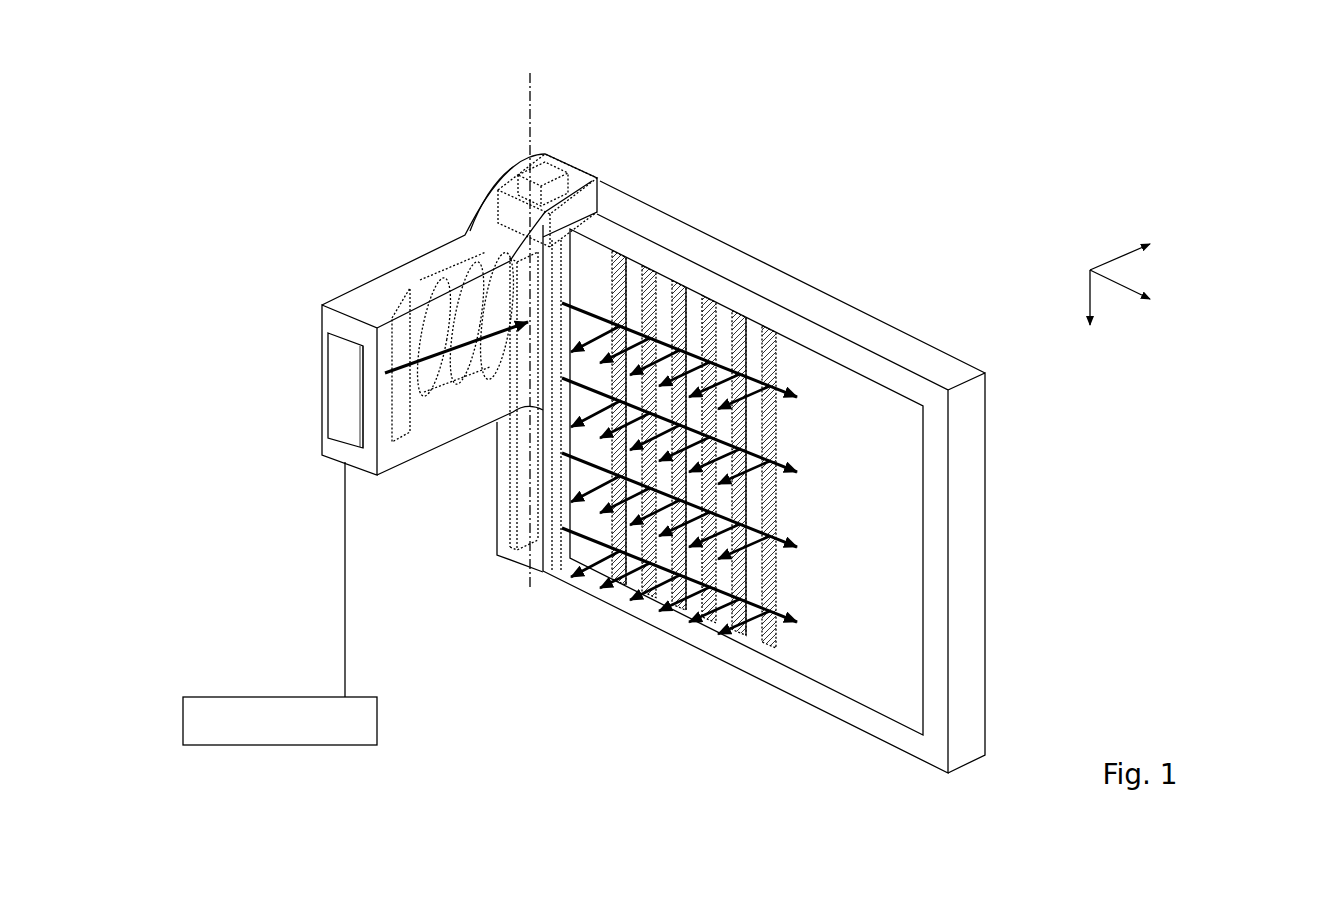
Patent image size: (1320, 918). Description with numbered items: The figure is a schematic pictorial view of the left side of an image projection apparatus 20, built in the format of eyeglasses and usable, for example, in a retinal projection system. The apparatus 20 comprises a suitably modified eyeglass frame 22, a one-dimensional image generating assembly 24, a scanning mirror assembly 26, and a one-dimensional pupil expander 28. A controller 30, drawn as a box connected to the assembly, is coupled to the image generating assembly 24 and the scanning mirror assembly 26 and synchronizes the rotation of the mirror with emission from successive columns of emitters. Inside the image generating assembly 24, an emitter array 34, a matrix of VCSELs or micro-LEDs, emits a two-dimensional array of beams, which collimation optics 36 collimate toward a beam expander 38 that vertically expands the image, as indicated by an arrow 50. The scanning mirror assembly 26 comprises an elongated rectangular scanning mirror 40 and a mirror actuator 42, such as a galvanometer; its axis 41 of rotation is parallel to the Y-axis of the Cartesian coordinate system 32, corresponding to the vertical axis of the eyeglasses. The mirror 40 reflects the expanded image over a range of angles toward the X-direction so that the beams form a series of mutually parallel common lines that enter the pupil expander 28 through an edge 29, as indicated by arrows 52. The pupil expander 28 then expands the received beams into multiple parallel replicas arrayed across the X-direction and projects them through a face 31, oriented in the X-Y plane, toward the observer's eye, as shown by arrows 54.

The image projection apparatus 20 is at (195, 143).
The eyeglass frame 22 is at (782, 268).
The 1D image generating assembly 24 is at (422, 245).
The scanning mirror assembly 26 is at (512, 160).
The 1D pupil expander 28 is at (768, 340).
The edge 29 is at (565, 500).
The controller 30 is at (290, 697).
The face 31 is at (923, 430).
The Cartesian coordinate system 32 is at (1212, 226).
The emitter array 34 is at (340, 392).
The collimation optics 36 is at (443, 397).
The 1D beam expander 38 is at (517, 473).
The scanning mirror 40 is at (580, 200).
The axis of rotation 41 is at (530, 78).
The mirror actuator 42 is at (573, 168).
The arrow 50 is at (397, 353).
The arrows 52 is at (593, 330).
The arrows 54 is at (720, 637).